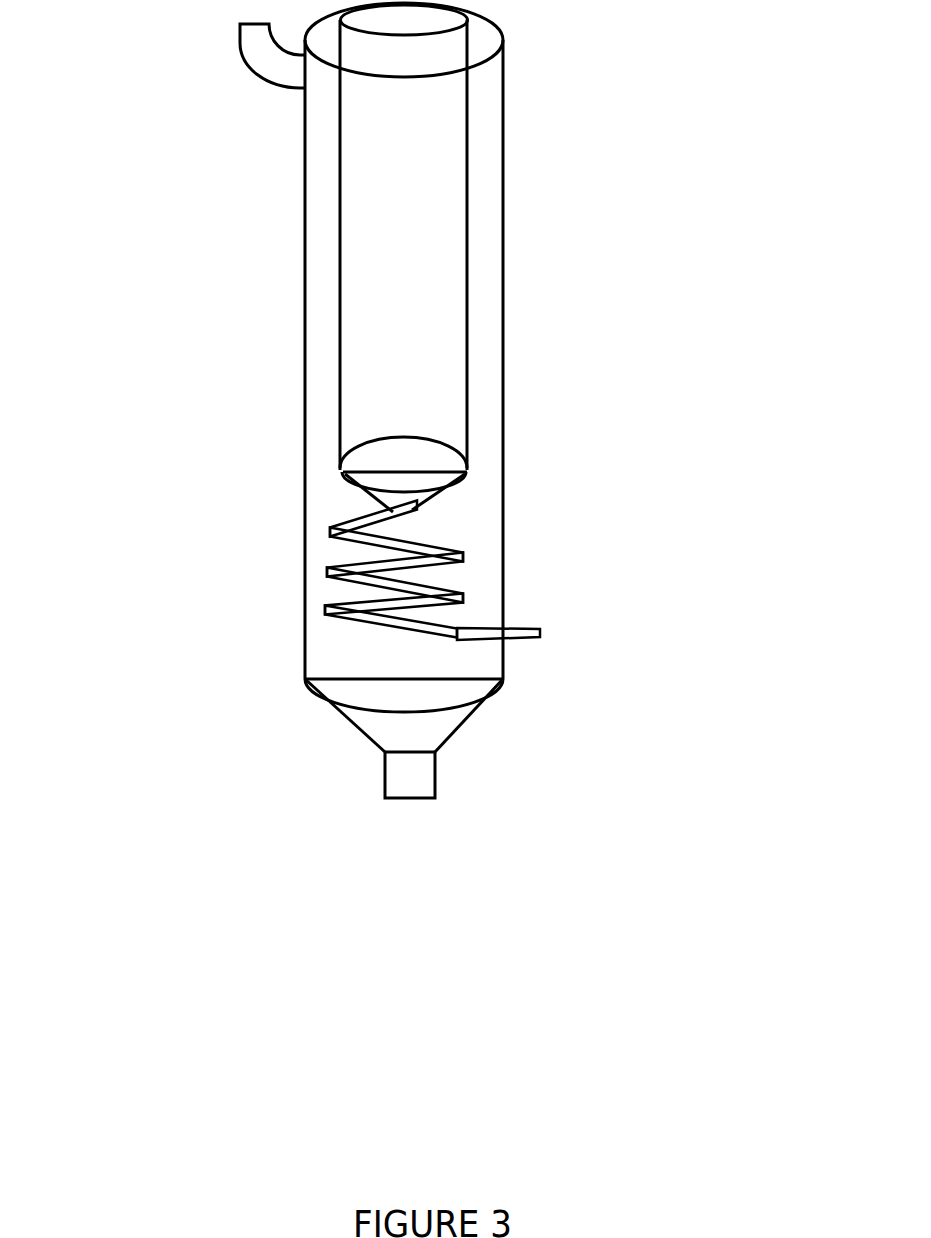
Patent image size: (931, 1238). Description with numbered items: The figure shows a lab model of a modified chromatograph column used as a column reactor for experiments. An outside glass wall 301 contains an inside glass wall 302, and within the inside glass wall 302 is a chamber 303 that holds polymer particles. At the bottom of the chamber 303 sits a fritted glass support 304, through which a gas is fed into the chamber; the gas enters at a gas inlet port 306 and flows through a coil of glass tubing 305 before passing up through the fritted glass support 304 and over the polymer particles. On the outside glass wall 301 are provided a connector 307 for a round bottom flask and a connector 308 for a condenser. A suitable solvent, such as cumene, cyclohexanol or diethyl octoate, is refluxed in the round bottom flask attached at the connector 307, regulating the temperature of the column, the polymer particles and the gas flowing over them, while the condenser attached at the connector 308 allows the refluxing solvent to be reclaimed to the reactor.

The outside glass wall 301 is at (506, 73).
The inside glass wall 302 is at (470, 180).
The chamber 303 is at (416, 270).
The fritted glass support 304 is at (420, 467).
The coil of glass tubing 305 is at (460, 558).
The gas inlet port 306 is at (540, 632).
The connector for a round bottom flask 307 is at (426, 782).
The connector for a condenser 308 is at (240, 42).